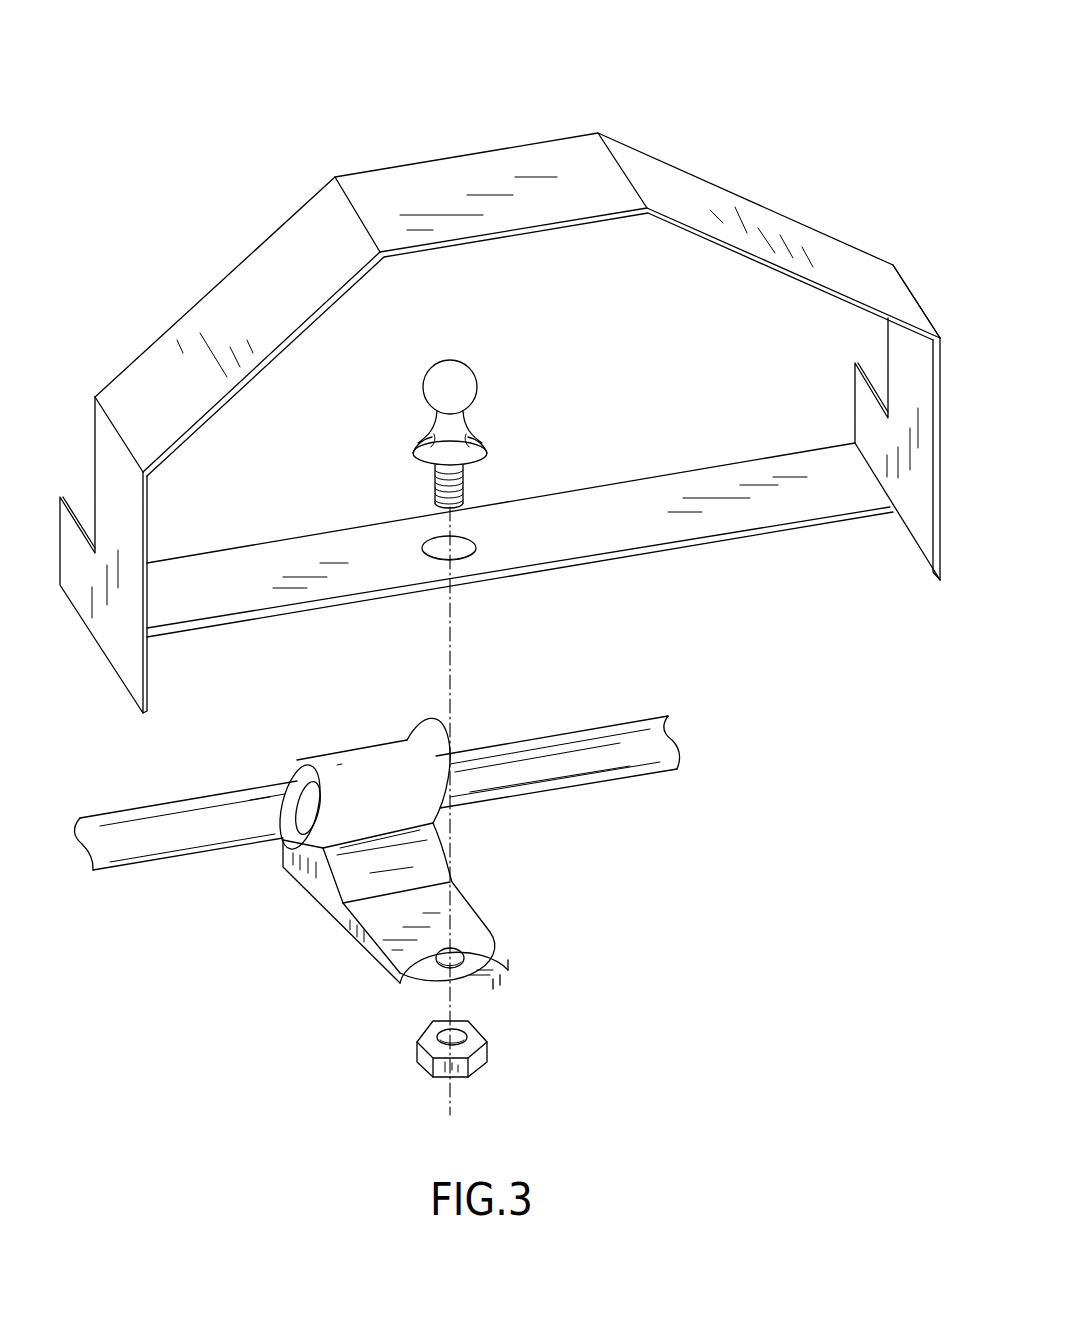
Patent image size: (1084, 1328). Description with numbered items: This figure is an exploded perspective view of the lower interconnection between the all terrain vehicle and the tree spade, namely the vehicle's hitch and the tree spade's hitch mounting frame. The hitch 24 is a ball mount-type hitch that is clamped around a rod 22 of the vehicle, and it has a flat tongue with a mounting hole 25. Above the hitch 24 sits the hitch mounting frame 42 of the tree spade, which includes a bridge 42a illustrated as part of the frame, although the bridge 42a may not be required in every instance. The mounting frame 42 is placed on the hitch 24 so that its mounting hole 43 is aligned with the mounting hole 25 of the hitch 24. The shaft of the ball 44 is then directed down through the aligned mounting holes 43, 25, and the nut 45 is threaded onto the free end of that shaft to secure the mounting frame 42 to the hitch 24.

The rod 22 is at (518, 737).
The hitch 24 is at (490, 930).
The mounting hole 25 is at (467, 953).
The hitch mounting frame 42 is at (500, 375).
The bridge 42a is at (560, 147).
The mounting hole 43 is at (473, 543).
The ball 44 is at (470, 370).
The nut 45 is at (485, 1047).